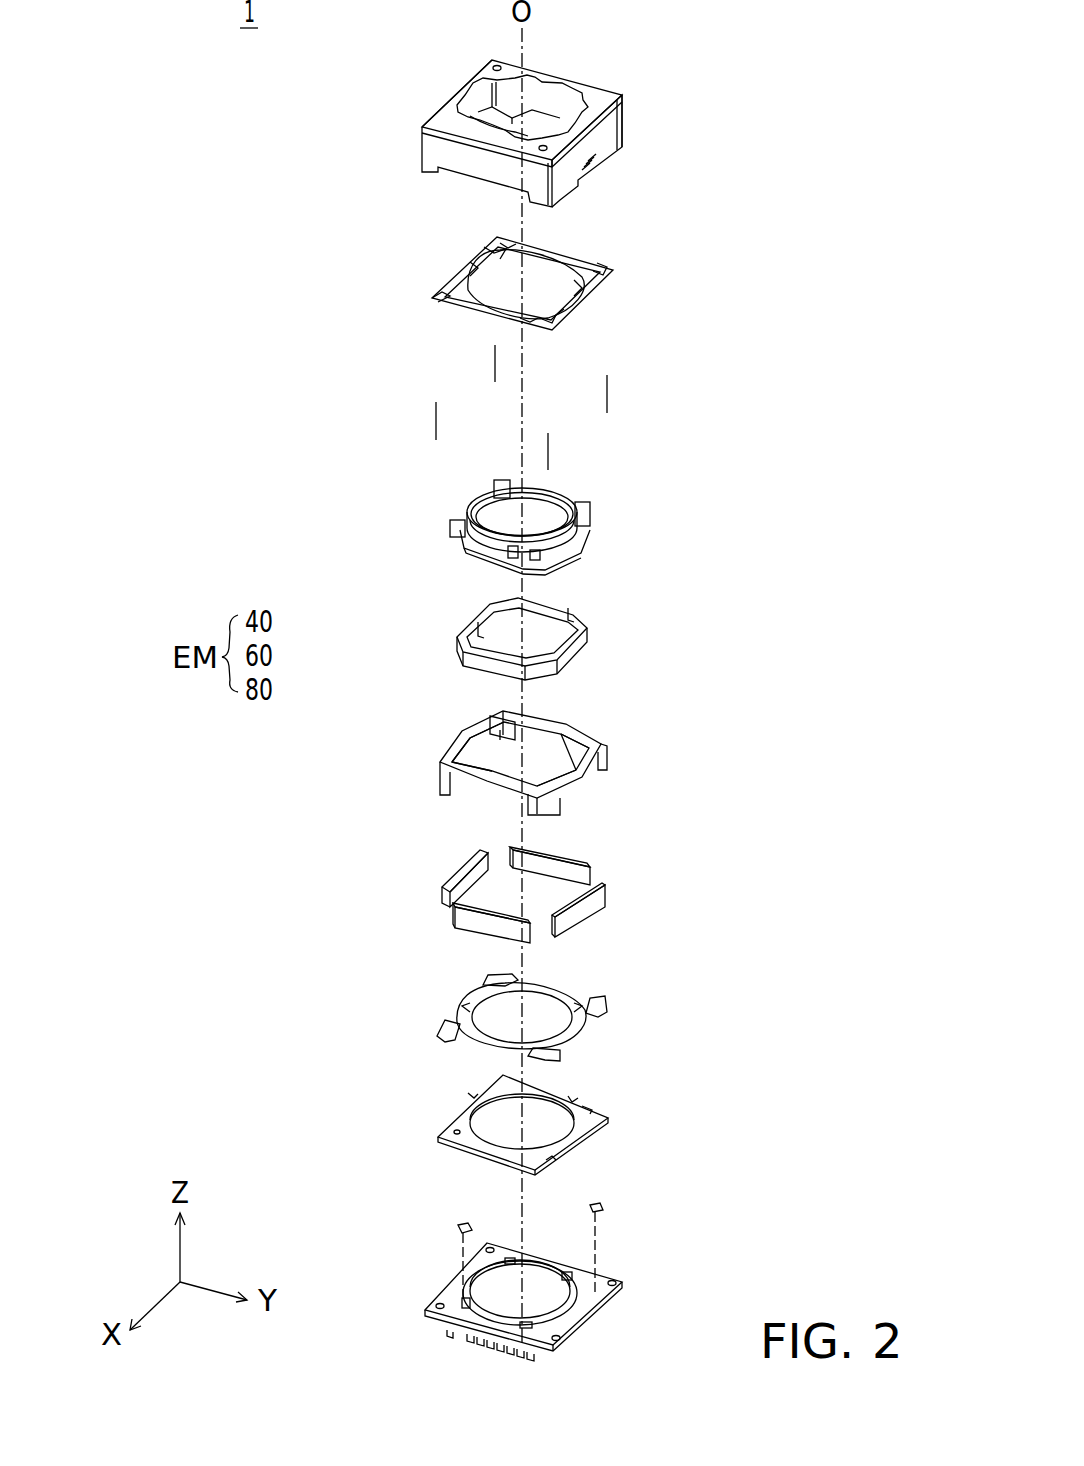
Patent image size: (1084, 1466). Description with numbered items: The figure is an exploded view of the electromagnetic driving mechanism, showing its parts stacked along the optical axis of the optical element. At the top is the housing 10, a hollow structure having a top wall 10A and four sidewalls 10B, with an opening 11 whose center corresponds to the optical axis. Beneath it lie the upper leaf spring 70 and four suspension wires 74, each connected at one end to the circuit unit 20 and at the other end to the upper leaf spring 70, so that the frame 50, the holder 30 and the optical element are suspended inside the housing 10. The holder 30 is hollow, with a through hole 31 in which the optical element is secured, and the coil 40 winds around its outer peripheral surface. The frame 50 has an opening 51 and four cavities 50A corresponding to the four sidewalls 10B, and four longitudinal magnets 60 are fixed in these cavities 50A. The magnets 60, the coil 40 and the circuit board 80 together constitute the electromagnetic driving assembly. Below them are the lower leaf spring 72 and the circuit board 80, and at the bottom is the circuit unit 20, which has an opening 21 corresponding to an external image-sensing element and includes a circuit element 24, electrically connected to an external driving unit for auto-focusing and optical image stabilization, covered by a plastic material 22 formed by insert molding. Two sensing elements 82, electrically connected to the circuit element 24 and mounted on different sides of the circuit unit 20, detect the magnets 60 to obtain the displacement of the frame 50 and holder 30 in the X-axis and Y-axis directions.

The housing 10 is at (420, 149).
The top wall 10A is at (448, 120).
The sidewalls 10B is at (605, 145).
The opening 11 is at (540, 124).
The circuit unit 20 is at (420, 1308).
The opening 21 is at (540, 1308).
The plastic material 22 is at (450, 1290).
The circuit element 24 is at (447, 1333).
The holder 30 is at (452, 522).
The through hole 31 is at (505, 528).
The coil 40 is at (455, 633).
The frame 50 is at (437, 765).
The cavities 50A is at (575, 715).
The opening 51 is at (540, 765).
The magnets 60 is at (460, 925).
The upper leaf spring 70 is at (430, 296).
The lower leaf spring 72 is at (440, 1018).
The suspension wires 74 is at (495, 375).
The circuit board 80 is at (435, 1130).
The sensing elements 82 is at (458, 1226).